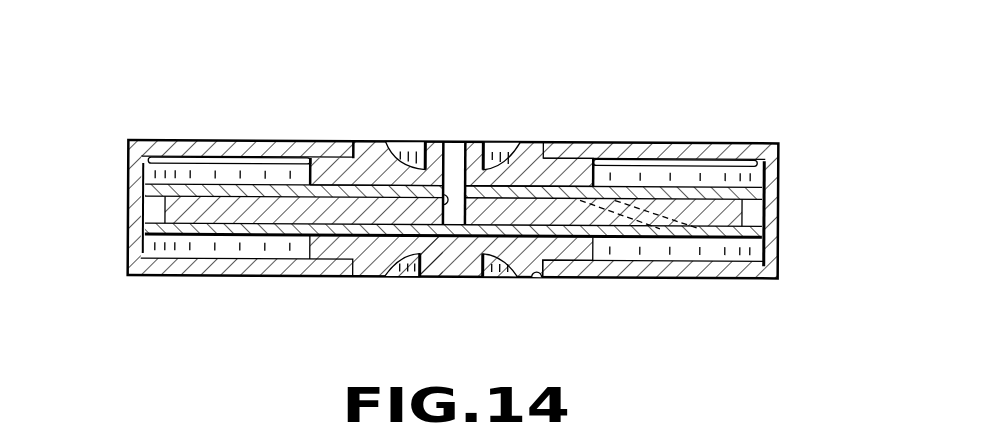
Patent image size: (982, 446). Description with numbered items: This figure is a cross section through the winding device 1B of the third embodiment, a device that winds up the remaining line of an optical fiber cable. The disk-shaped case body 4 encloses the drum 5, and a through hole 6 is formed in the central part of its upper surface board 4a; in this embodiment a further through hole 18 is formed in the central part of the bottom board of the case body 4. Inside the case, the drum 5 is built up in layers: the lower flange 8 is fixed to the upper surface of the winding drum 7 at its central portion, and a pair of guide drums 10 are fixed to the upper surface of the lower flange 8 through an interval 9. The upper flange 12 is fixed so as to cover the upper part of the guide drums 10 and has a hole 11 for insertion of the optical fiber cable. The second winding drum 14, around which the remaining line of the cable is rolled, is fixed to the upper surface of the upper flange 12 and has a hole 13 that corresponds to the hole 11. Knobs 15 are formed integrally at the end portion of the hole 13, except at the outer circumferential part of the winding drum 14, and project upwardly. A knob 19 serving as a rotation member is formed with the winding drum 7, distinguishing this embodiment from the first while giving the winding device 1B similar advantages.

The winding device 1B is at (672, 98).
The case body 4 is at (652, 284).
The upper surface board 4a is at (222, 146).
The second winding drum 14 is at (315, 145).
The through hole 6 is at (538, 146).
The knobs 15 is at (427, 143).
The hole 13 is at (452, 150).
The upper flange 12 is at (727, 183).
The guide drums 10 is at (177, 210).
The drum 5 is at (263, 242).
The winding drum 7 is at (325, 250).
The hole 11 is at (412, 258).
The knob 19 is at (425, 236).
The interval 9 is at (450, 237).
The through hole 18 is at (532, 278).
The lower flange 8 is at (713, 240).